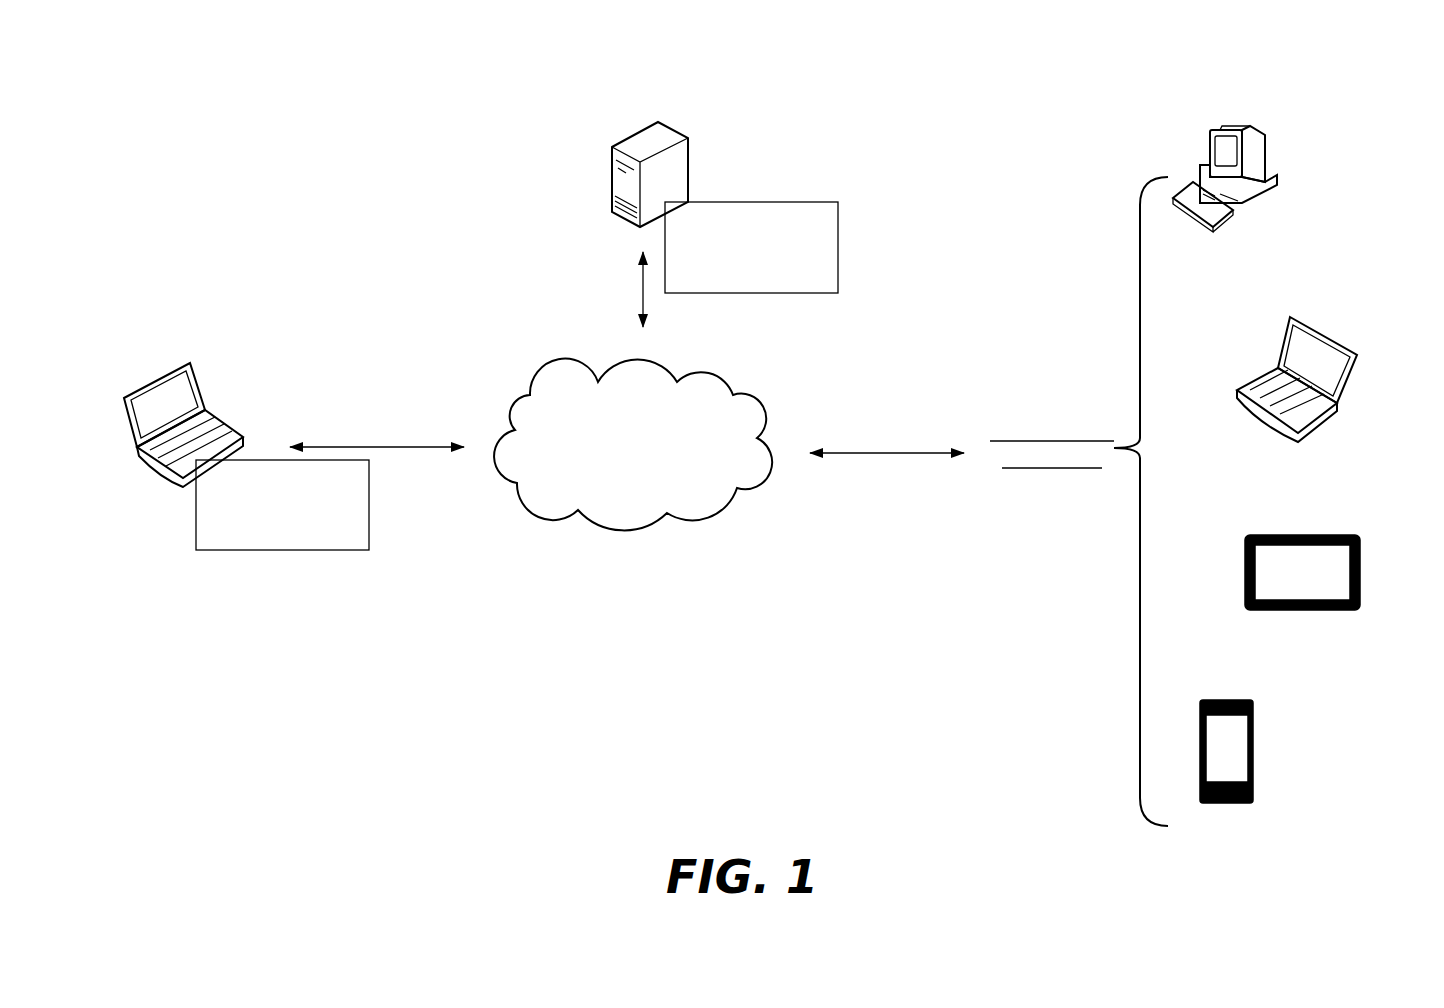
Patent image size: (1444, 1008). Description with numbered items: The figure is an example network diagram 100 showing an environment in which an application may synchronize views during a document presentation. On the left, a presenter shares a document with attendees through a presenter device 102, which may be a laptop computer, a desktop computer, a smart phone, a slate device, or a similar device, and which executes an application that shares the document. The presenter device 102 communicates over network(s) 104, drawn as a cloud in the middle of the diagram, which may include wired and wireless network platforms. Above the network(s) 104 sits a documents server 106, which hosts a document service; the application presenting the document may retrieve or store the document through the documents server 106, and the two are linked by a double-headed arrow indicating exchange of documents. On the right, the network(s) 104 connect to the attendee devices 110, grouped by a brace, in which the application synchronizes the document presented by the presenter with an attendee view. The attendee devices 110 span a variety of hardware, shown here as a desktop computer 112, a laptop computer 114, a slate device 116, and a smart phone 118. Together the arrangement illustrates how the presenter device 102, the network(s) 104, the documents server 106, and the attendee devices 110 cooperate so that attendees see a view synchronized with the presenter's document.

The diagram 100 is at (1304, 62).
The presenter device 102 is at (207, 379).
The network(s) 104 is at (664, 356).
The documents server 106 is at (690, 117).
The attendee devices 110 is at (1057, 401).
The desktop computer 112 is at (1194, 144).
The laptop computer 114 is at (1276, 332).
The slate device 116 is at (1274, 529).
The smart phone 118 is at (1232, 694).